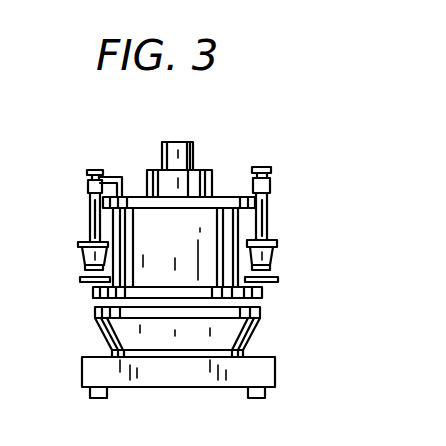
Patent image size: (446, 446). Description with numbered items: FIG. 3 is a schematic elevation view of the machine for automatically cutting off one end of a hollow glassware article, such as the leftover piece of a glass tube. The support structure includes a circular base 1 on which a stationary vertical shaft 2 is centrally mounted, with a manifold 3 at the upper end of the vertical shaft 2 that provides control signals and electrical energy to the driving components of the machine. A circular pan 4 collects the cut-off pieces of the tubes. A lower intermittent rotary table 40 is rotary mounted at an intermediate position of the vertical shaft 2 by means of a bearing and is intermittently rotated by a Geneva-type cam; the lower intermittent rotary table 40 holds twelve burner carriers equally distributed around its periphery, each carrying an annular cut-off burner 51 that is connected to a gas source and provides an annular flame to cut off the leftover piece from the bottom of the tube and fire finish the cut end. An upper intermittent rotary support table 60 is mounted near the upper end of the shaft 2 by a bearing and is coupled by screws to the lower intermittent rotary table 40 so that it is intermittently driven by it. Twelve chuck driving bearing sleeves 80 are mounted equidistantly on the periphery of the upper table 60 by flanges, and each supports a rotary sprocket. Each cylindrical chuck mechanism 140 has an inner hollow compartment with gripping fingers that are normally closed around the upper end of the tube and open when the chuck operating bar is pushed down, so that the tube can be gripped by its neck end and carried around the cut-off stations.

The circular base 1 is at (265, 368).
The stationary vertical shaft 2 is at (196, 142).
The manifold 3 is at (210, 172).
The circular pan 4 is at (253, 330).
The lower intermittent rotary table 40 is at (265, 293).
The annular cut-off burner 51 is at (82, 279).
The upper intermittent rotary support table 60 is at (132, 192).
The chuck driving bearing sleeve 80 is at (86, 204).
The cylindrical chuck mechanism 140 is at (282, 240).